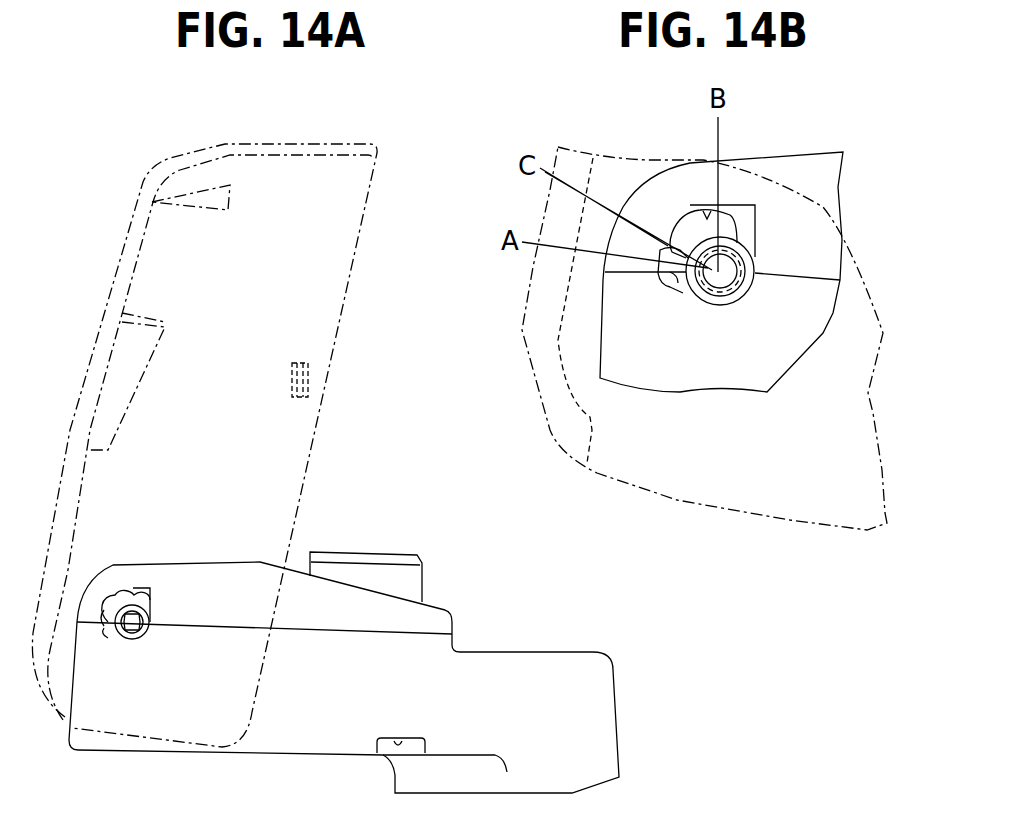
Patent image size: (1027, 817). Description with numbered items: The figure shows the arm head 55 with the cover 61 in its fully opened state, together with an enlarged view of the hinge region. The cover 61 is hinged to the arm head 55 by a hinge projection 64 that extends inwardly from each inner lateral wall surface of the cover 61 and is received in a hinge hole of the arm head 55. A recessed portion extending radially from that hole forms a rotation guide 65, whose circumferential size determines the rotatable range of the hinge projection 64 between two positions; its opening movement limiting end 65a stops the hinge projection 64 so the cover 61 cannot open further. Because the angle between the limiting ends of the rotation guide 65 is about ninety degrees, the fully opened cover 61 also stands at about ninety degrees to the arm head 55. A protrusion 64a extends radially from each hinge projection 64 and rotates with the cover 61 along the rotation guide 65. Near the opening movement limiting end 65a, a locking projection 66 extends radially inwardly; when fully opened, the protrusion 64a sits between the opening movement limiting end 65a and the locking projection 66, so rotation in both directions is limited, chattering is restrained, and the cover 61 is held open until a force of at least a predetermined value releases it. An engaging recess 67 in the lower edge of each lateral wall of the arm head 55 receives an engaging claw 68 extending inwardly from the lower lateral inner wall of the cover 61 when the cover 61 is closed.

In FIG. 14A, the arm head 55 is at (603, 700).
In FIG. 14B, the arm head 55 is at (837, 187).
In FIG. 14A, the cover 61 is at (332, 167).
In FIG. 14B, the cover 61 is at (681, 480).
In FIG. 14A, the hinge projection 64 is at (143, 637).
In FIG. 14B, the hinge projection 64 is at (727, 298).
In FIG. 14A, the protrusion 64a is at (105, 633).
In FIG. 14B, the protrusion 64a is at (660, 232).
In FIG. 14A, the rotation guide 65 is at (130, 593).
In FIG. 14B, the rotation guide 65 is at (700, 213).
In FIG. 14B, the opening movement limiting end 65a is at (670, 283).
In FIG. 14B, the locking projection 66 is at (680, 220).
In FIG. 14A, the engaging recess 67 is at (397, 744).
In FIG. 14A, the engaging claw 68 is at (293, 377).